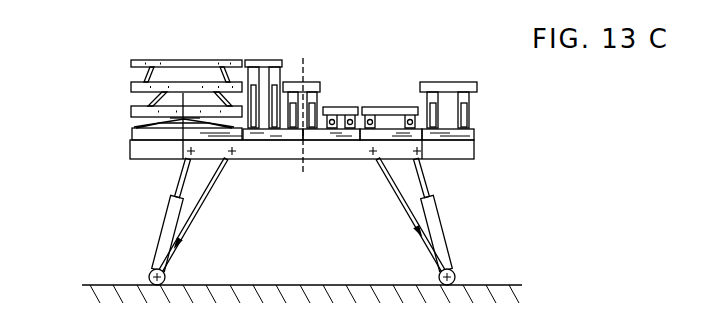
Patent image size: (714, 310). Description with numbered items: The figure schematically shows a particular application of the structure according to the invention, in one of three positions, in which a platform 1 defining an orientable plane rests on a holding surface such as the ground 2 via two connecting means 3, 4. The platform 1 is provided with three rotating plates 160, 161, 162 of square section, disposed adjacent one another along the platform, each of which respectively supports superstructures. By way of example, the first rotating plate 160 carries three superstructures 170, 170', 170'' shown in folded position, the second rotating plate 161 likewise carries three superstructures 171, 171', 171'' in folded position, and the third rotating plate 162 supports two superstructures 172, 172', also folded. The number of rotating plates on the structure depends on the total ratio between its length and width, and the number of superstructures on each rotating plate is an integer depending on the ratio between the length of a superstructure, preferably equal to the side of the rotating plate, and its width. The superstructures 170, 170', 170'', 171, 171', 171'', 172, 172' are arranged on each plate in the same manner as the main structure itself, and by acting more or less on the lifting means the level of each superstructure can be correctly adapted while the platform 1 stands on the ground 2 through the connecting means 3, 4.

The platform 1 is at (350, 155).
The ground 2 is at (497, 285).
The connecting means 3 is at (160, 206).
The connecting means 4 is at (460, 224).
The rotating plate 160 is at (143, 132).
The rotating plate 161 is at (267, 135).
The rotating plate 162 is at (474, 133).
The superstructure 170 is at (147, 110).
The superstructure 170' is at (147, 75).
The superstructure 170'' is at (147, 47).
The superstructure 171 is at (340, 89).
The superstructure 171' is at (307, 75).
The superstructure 171'' is at (252, 75).
The superstructure 172 is at (390, 89).
The superstructure 172' is at (448, 75).